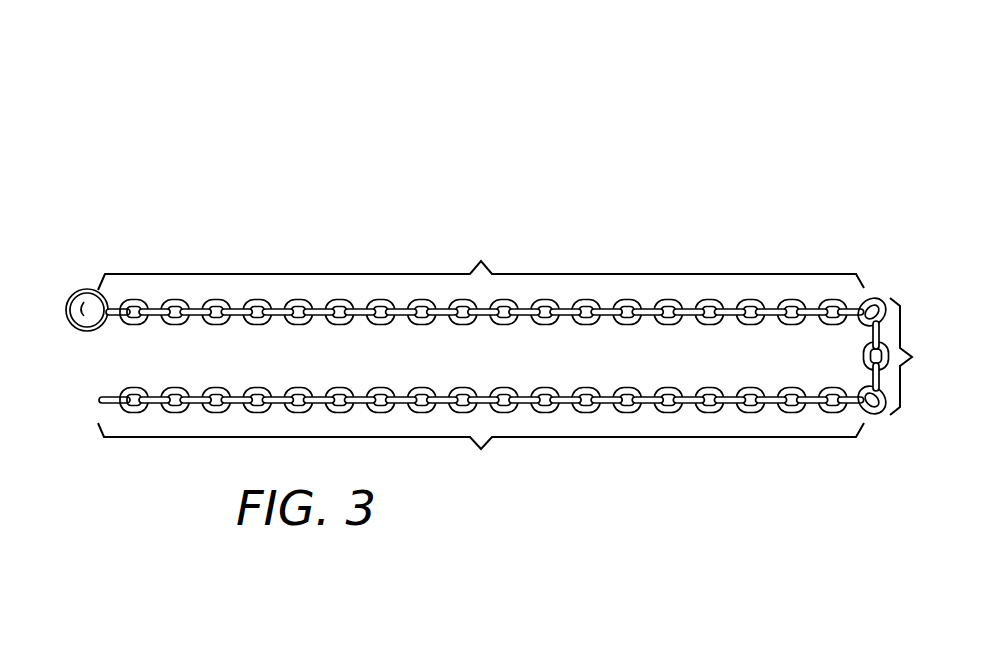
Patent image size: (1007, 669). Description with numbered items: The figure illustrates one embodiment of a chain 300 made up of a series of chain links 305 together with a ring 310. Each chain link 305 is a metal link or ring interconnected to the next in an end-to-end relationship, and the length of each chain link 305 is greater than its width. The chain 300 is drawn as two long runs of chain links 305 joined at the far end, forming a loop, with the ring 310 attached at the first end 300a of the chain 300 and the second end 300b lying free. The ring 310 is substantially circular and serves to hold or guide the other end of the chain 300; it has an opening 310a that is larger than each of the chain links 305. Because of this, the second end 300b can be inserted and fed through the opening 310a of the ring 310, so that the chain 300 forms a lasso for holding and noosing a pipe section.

The chain 300 is at (333, 196).
The first end of the chain 300a is at (97, 259).
The second end of the chain 300b is at (105, 452).
The chain links 305 is at (529, 354).
The ring 310 is at (67, 310).
The opening 310a is at (80, 318).